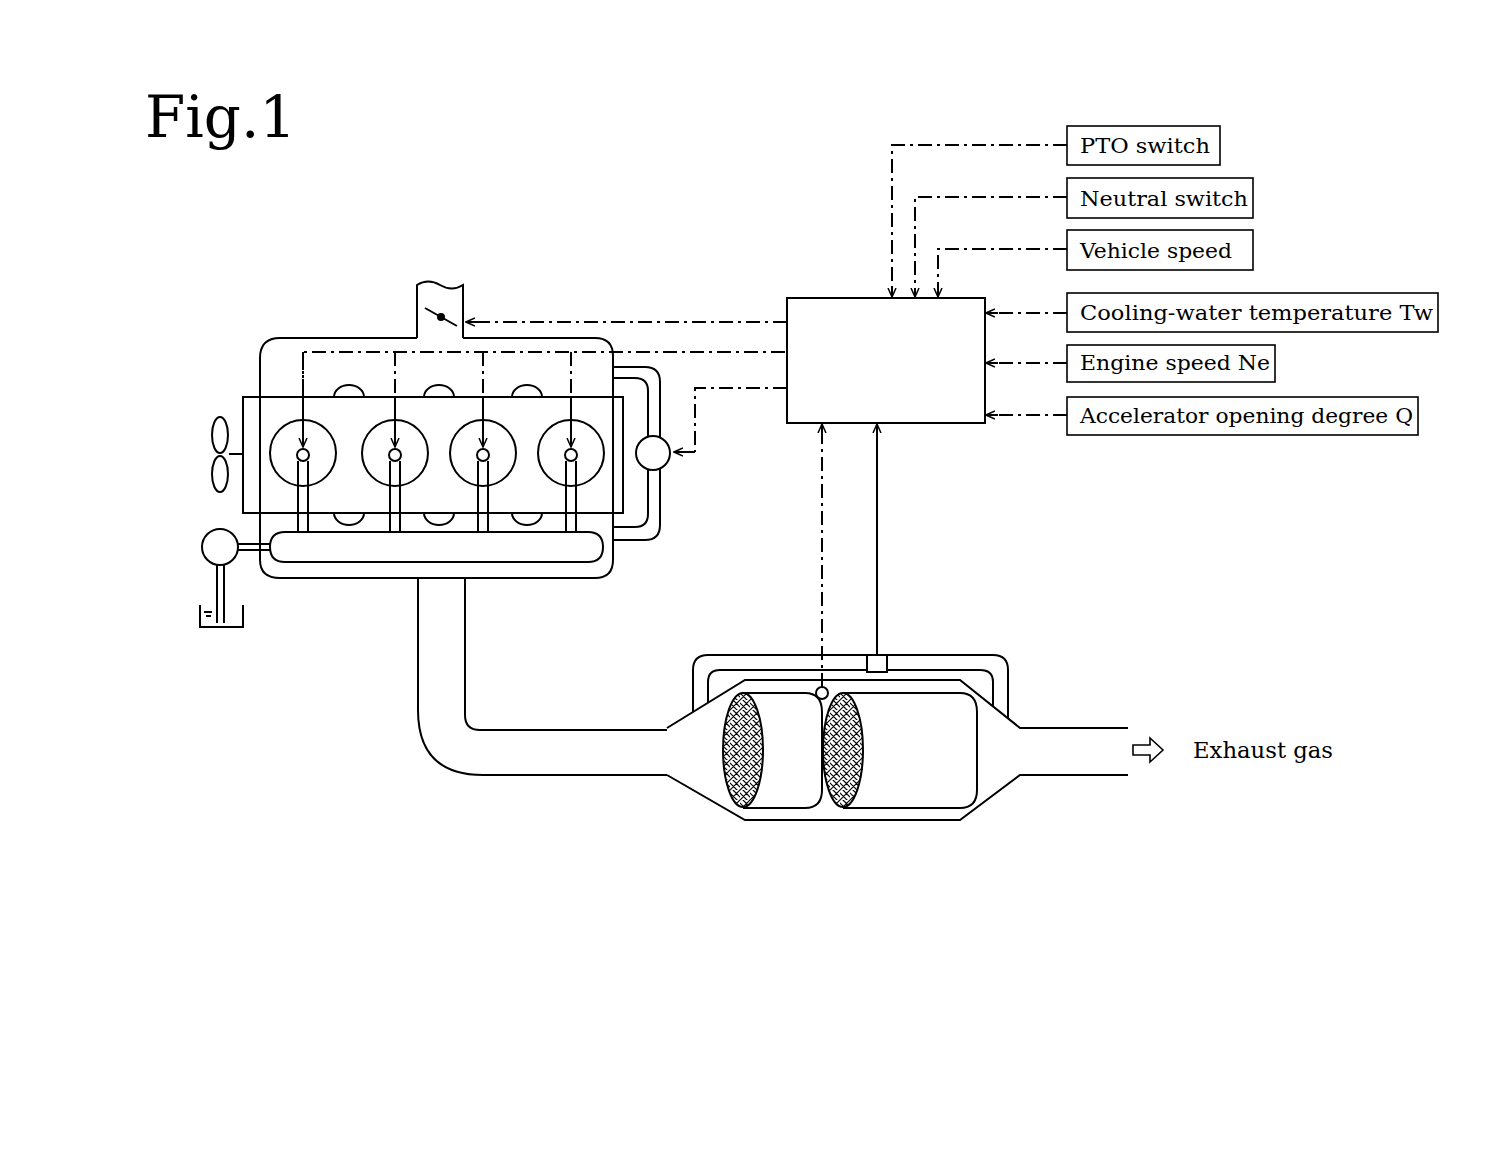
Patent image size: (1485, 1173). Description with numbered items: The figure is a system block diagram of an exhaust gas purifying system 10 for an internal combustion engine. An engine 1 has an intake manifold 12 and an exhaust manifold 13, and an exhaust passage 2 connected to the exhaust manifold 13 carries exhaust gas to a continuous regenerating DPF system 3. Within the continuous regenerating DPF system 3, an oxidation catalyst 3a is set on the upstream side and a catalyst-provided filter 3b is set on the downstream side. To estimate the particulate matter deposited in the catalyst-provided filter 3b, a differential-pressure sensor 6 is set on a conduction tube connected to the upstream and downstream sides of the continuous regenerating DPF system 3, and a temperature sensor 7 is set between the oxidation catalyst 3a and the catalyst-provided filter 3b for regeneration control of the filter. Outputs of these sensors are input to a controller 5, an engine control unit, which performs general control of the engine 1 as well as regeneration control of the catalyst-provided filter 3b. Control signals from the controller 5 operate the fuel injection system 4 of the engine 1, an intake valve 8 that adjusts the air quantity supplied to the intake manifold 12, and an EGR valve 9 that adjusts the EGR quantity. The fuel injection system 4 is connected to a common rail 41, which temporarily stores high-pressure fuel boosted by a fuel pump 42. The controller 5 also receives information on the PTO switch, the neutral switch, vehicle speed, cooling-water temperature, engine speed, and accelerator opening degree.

The engine 1 is at (266, 336).
The exhaust passage 2 is at (493, 777).
The continuous regenerating DPF system 3 is at (897, 830).
The oxidation catalyst 3a is at (778, 800).
The catalyst-provided filter 3b is at (925, 788).
The fuel injection system 4 is at (587, 438).
The controller (ECU) 5 is at (820, 298).
The differential-pressure sensor 6 is at (884, 654).
The temperature sensor 7 is at (826, 687).
The intake valve 8 is at (417, 287).
The EGR valve 9 is at (667, 467).
The exhaust gas purifying system 10 is at (614, 862).
The intake manifold 12 is at (323, 338).
The exhaust manifold 13 is at (545, 578).
The common rail 41 is at (342, 553).
The fuel pump 42 is at (207, 533).